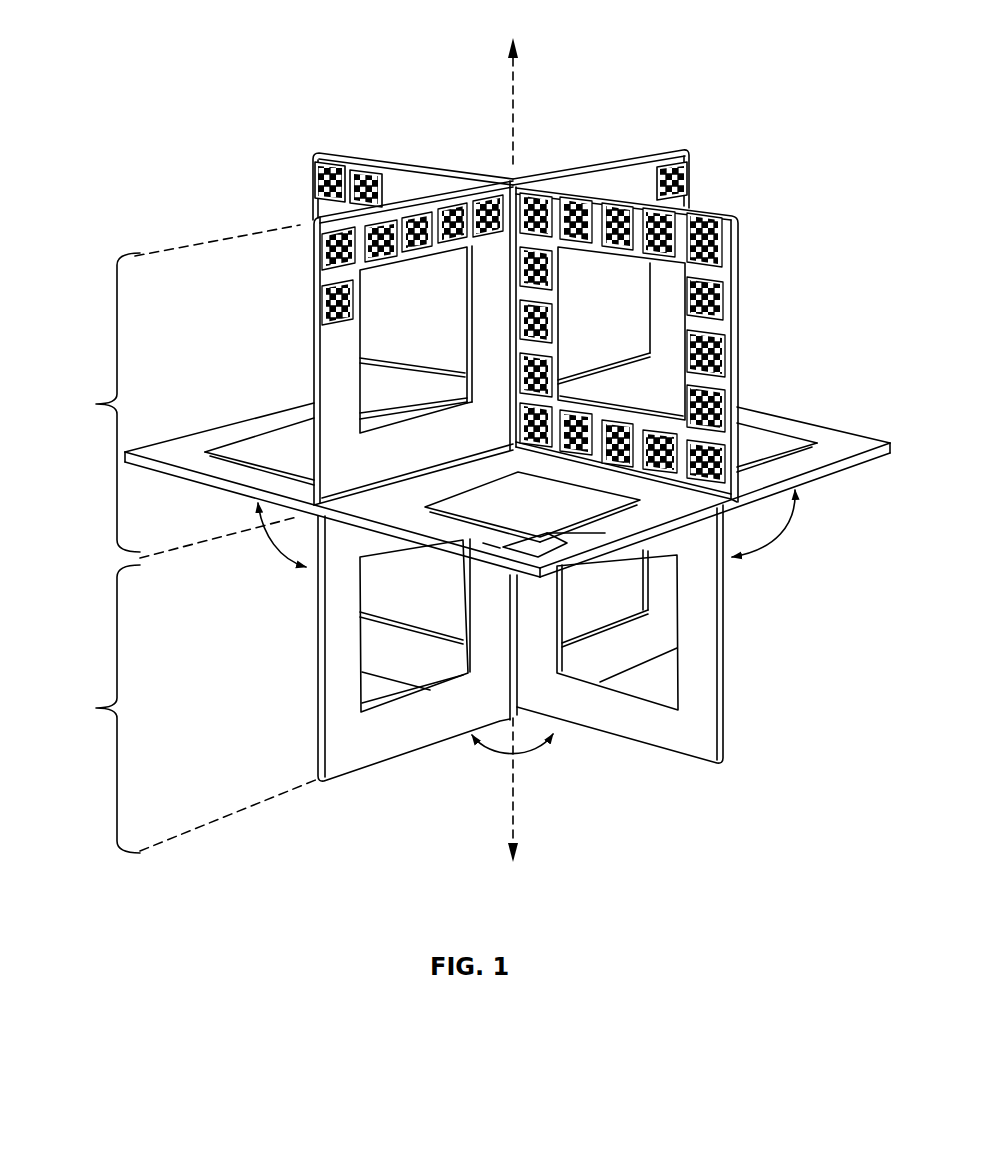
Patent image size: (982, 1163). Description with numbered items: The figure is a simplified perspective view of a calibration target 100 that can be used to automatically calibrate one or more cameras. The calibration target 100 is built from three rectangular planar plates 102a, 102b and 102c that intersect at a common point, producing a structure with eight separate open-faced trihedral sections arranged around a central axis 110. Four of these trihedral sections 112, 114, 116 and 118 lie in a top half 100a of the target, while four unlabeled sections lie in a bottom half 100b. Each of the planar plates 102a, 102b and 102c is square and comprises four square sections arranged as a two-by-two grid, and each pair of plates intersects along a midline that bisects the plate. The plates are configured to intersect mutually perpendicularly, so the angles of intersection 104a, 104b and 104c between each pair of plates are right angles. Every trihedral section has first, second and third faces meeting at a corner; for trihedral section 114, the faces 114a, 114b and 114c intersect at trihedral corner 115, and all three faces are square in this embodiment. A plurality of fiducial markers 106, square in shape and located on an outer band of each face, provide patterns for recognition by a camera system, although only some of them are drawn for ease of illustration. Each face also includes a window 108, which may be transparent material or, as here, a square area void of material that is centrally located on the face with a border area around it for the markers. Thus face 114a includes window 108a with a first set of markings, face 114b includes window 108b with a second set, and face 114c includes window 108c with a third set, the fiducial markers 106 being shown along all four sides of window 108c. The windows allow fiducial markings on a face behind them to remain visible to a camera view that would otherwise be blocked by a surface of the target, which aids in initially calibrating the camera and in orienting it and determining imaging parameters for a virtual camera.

The calibration target 100 is at (328, 93).
The top half 100a is at (172, 391).
The bottom half 100b is at (181, 709).
The planar plate 102a is at (202, 430).
The planar plate 102b is at (398, 758).
The planar plate 102c is at (718, 763).
The angle of intersection 104a is at (270, 544).
The angle of intersection 104b is at (501, 757).
The angle of intersection 104c is at (779, 541).
The fiducial marker 106 is at (326, 303).
The window 108 is at (357, 630).
The window 108a is at (437, 306).
The window 108b is at (572, 515).
The window 108c is at (635, 306).
The central axis 110 is at (494, 450).
The trihedral section 112 is at (292, 212).
The trihedral section 114 is at (490, 254).
The face 114a is at (387, 465).
The face 114b is at (418, 505).
The face 114c is at (720, 382).
The trihedral corner 115 is at (511, 438).
The trihedral section 116 is at (715, 188).
The trihedral section 118 is at (549, 141).